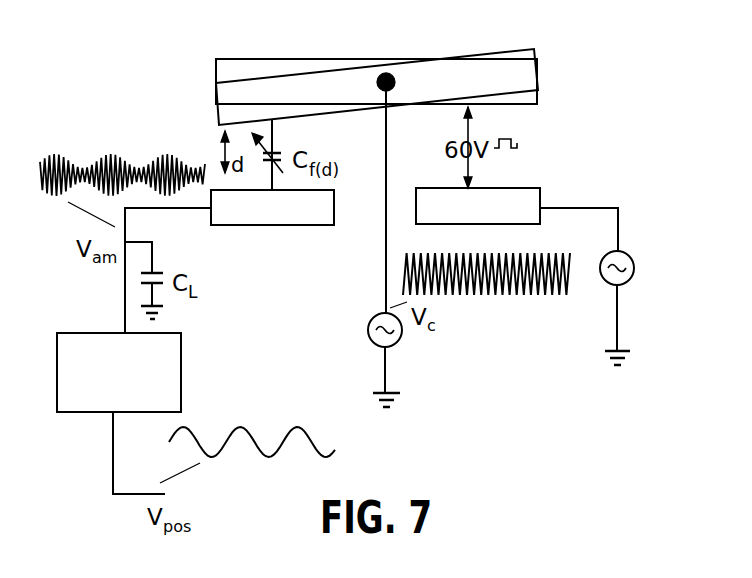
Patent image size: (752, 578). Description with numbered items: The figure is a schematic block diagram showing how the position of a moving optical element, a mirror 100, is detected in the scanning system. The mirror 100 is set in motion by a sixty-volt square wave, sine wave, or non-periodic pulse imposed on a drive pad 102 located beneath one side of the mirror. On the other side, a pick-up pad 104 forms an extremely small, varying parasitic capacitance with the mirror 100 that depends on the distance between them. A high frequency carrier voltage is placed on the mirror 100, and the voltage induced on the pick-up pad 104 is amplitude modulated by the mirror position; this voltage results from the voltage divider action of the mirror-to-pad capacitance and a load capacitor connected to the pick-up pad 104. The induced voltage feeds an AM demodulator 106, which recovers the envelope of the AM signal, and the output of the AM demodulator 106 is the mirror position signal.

The mirror 100 is at (383, 58).
The drive pad 102 is at (525, 188).
The pick-up pad 104 is at (270, 225).
The AM demodulator 106 is at (181, 378).